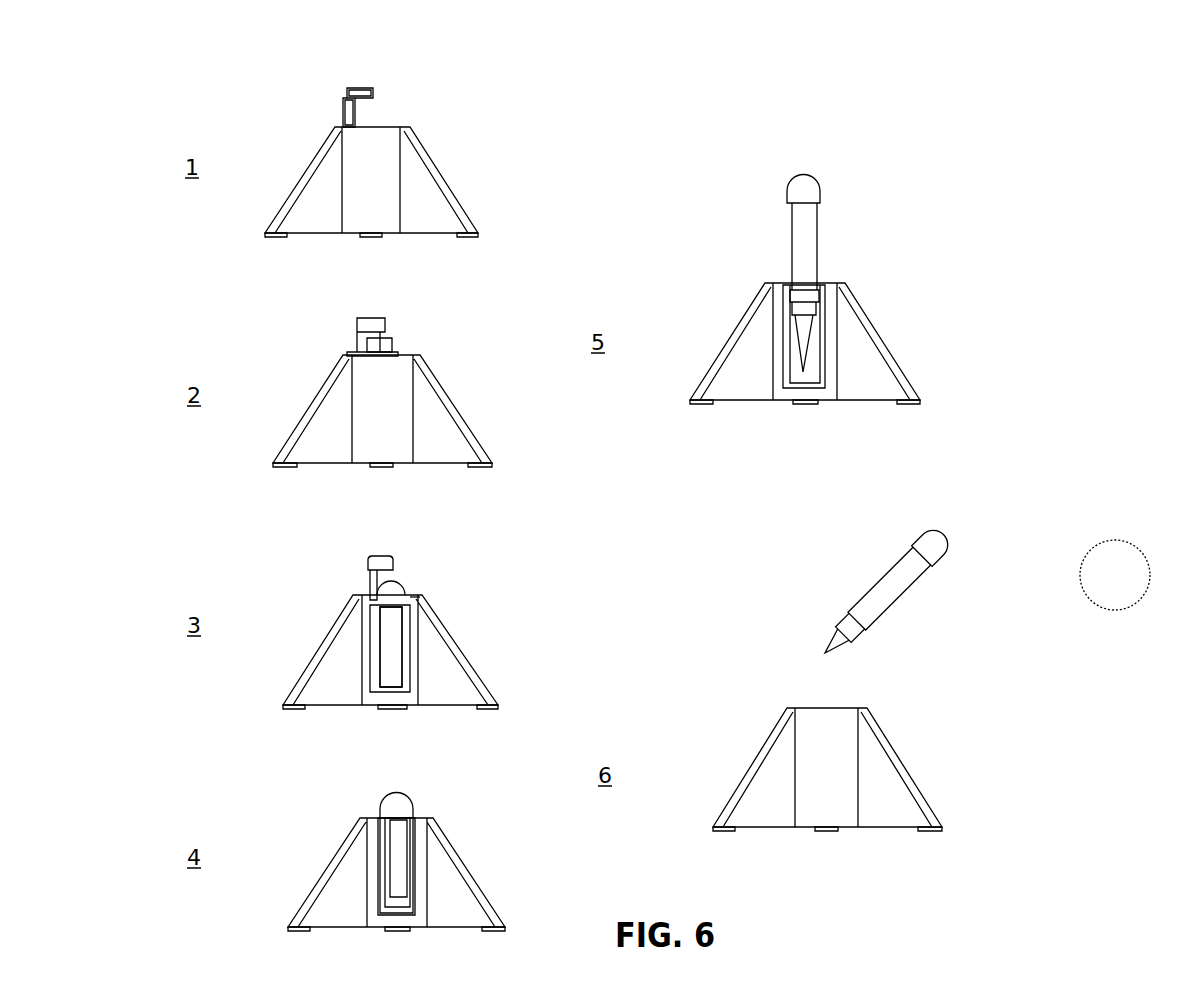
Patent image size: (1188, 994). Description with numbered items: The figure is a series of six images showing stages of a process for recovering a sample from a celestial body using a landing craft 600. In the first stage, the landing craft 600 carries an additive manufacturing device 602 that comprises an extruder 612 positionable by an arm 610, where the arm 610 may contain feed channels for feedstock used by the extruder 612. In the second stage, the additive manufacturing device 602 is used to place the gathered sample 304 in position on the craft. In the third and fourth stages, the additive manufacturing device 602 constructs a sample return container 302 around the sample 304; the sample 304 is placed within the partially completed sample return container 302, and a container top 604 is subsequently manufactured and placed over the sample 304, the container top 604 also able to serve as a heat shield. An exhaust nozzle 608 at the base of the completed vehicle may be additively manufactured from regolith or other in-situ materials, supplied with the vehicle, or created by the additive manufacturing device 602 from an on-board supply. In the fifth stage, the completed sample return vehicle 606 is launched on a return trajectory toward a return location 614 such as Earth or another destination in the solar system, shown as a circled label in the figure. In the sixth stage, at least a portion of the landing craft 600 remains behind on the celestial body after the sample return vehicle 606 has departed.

The landing craft 600 is at (277, 172).
The additive manufacturing device 602 is at (323, 110).
The container top 604 is at (402, 590).
The sample return vehicle 606 is at (373, 637).
The exhaust nozzle 608 is at (395, 718).
The arm 610 is at (372, 102).
The extruder 612 is at (368, 107).
The sample return container 302 is at (435, 590).
The sample 304 is at (360, 340).
The return location 614 is at (1152, 570).